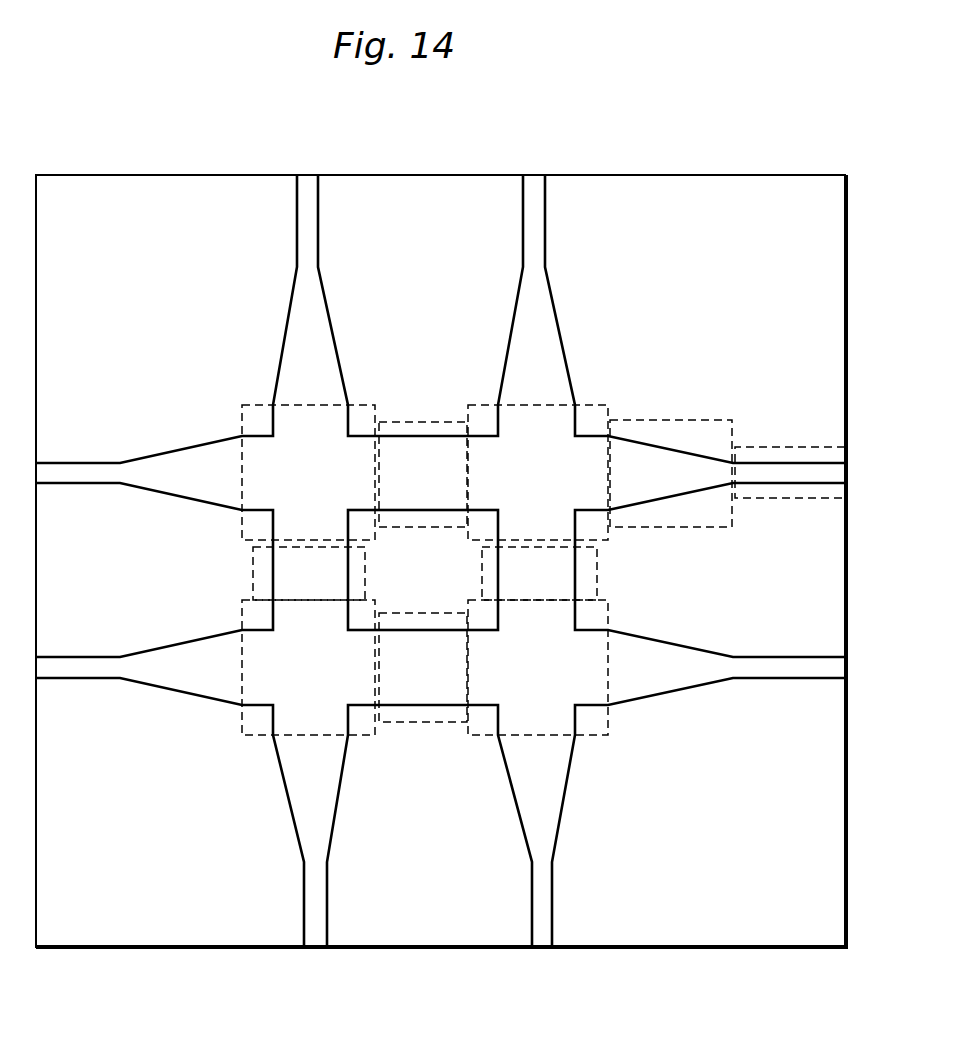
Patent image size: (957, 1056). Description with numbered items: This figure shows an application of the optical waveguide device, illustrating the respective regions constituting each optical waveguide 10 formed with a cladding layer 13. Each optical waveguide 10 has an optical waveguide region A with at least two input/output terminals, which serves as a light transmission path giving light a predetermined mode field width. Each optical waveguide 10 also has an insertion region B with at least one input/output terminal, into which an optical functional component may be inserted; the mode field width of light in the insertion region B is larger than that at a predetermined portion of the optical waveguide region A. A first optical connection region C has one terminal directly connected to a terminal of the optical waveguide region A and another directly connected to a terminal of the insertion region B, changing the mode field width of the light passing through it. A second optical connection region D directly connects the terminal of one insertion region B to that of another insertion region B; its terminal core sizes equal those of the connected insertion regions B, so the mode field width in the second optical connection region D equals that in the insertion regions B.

The optical waveguide 10 is at (594, 296).
The cladding layer 13 is at (829, 611).
The optical waveguide region A is at (786, 447).
The insertion region B is at (358, 402).
The first optical connection region C is at (677, 420).
The second optical connection region D is at (421, 422).